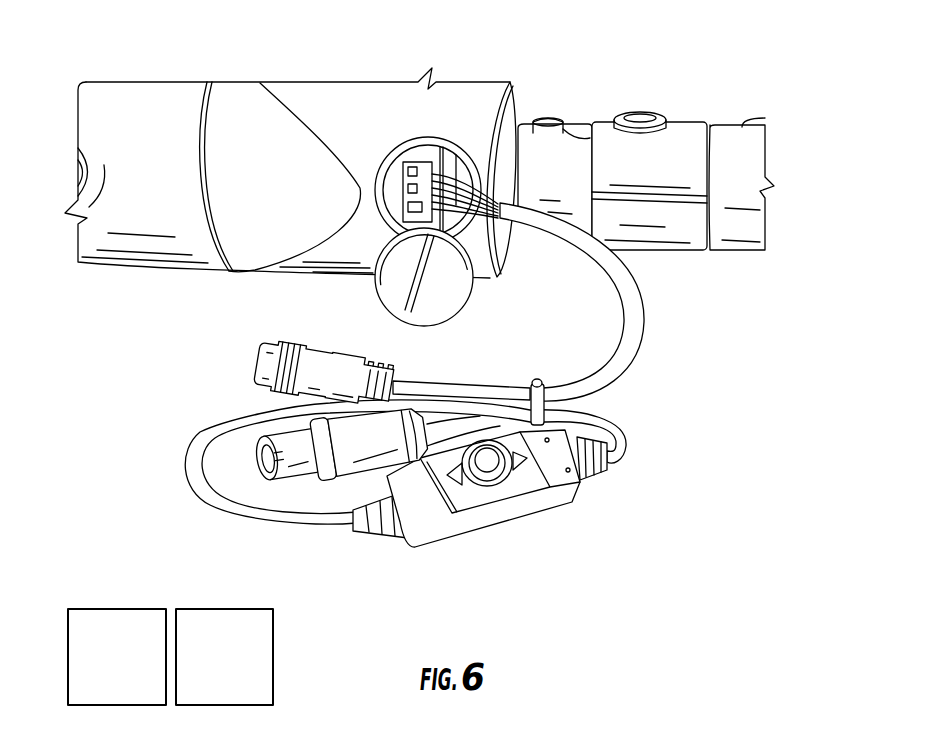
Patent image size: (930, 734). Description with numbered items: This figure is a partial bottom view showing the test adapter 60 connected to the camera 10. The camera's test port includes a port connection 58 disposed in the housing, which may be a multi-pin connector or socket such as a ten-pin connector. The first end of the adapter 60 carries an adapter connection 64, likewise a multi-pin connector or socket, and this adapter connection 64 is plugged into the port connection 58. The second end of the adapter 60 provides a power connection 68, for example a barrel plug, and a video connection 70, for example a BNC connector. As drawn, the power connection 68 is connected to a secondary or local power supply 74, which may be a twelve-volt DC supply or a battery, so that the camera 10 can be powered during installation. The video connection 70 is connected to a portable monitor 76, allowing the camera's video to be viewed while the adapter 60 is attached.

The camera 10 is at (334, 62).
The port connection 58 is at (486, 143).
The adapter connection 64 is at (422, 168).
The test adapter 60 is at (648, 408).
The power connection 68 is at (272, 345).
The video connection 70 is at (330, 483).
The secondary power supply 74 is at (256, 359).
The portable monitor 76 is at (260, 461).